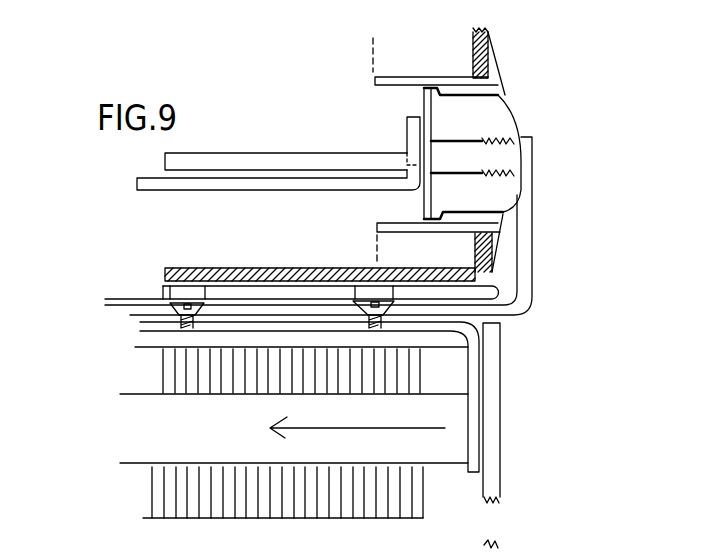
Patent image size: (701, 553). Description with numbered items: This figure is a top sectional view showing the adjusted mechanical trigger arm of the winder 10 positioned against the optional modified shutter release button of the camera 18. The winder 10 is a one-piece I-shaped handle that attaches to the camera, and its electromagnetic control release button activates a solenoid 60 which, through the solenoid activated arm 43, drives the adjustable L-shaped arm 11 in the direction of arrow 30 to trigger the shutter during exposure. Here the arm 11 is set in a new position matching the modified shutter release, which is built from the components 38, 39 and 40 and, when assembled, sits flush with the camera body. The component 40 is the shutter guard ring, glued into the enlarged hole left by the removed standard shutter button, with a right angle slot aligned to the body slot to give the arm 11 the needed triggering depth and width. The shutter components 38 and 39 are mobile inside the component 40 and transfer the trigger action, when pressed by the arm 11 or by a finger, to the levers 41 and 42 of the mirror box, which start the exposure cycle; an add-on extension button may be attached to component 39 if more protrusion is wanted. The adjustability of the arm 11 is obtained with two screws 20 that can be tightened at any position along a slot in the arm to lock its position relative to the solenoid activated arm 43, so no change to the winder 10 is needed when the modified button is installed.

The winder 10 is at (497, 368).
The adjustable L-shaped arm 11 is at (523, 227).
The camera 18 is at (477, 274).
The screws 20 is at (352, 301).
The arrow 30 is at (357, 417).
The shutter release button component 38 is at (424, 102).
The shutter release button component 39 is at (502, 122).
The shutter guard ring 40 is at (490, 82).
The lever of the mirror box 41 is at (250, 183).
The lever of the mirror box 42 is at (277, 162).
The solenoid activated arm 43 is at (472, 380).
The solenoid 60 is at (160, 364).